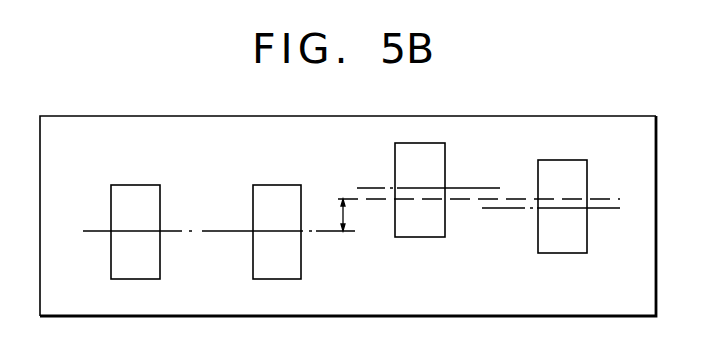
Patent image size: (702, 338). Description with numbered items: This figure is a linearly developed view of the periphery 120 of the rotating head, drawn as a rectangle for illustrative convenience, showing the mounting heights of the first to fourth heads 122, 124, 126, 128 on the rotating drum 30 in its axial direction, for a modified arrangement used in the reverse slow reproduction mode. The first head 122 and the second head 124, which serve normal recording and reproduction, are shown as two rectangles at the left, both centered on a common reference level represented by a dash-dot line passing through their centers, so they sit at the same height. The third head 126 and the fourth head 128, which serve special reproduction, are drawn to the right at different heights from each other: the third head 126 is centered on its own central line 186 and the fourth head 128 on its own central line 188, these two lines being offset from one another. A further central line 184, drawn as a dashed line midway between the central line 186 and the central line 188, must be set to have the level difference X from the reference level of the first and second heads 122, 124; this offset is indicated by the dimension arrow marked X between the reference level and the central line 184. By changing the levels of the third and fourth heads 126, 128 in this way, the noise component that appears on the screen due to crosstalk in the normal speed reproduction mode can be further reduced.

The rotating drum 30 is at (172, 116).
The periphery 120 is at (535, 116).
The first head 122 is at (131, 185).
The second head 124 is at (280, 185).
The third head 126 is at (422, 237).
The fourth head 128 is at (568, 253).
The central line 184 is at (612, 198).
The central line of third head 186 is at (485, 188).
The central line of fourth head 188 is at (605, 208).
The level difference X is at (346, 215).